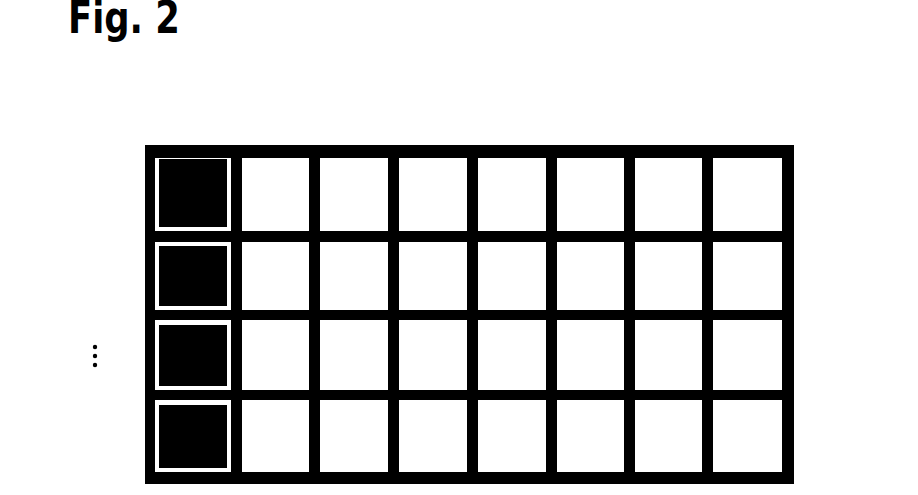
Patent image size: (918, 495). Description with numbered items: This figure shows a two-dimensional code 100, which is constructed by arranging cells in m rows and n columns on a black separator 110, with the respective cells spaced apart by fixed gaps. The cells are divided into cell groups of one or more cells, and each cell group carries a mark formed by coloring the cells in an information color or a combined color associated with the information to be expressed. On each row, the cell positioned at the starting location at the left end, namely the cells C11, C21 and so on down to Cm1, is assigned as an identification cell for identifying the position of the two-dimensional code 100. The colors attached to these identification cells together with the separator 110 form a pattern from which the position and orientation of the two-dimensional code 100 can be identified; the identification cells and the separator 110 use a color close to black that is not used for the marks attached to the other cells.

The two-dimensional code 100 is at (611, 122).
The separator 110 is at (205, 146).
The cell C11 is at (96, 196).
The cell C21 is at (96, 276).
The cell Cm1 is at (97, 437).